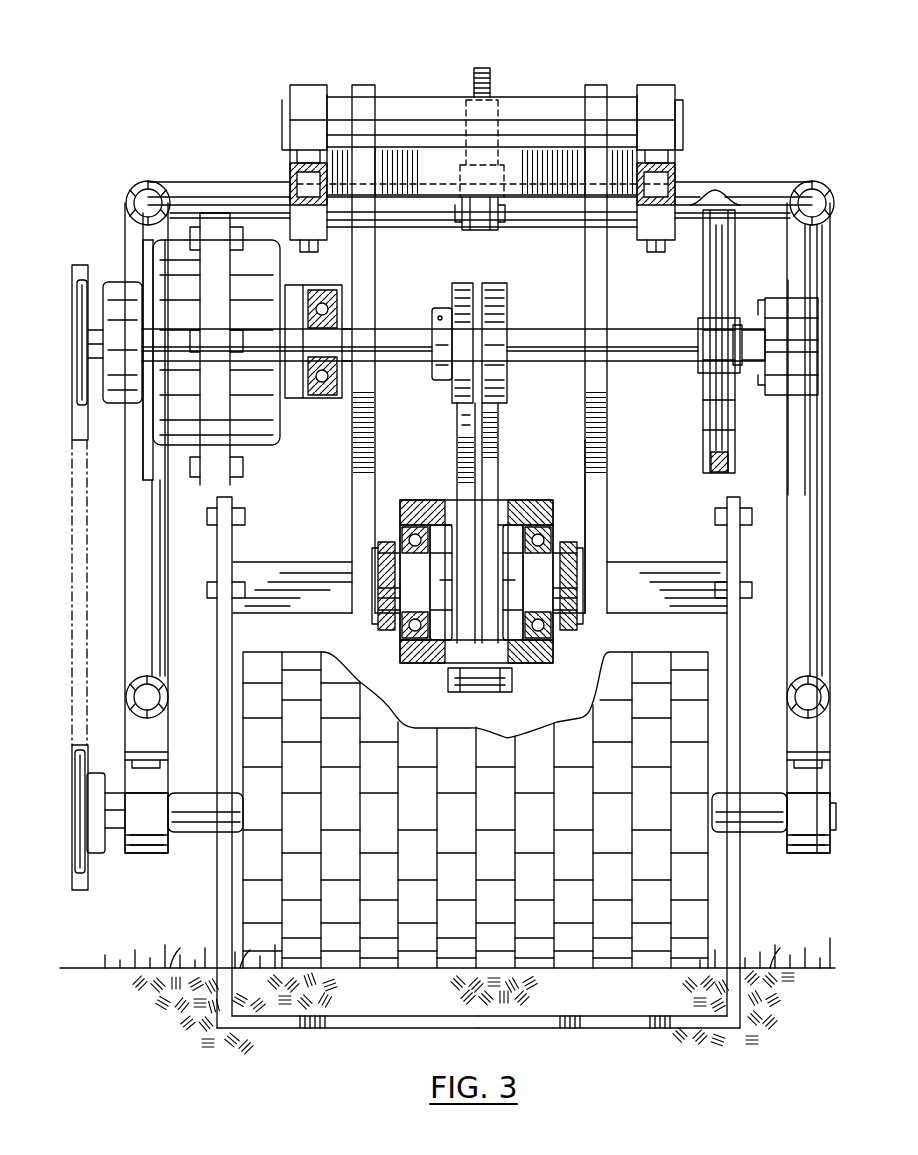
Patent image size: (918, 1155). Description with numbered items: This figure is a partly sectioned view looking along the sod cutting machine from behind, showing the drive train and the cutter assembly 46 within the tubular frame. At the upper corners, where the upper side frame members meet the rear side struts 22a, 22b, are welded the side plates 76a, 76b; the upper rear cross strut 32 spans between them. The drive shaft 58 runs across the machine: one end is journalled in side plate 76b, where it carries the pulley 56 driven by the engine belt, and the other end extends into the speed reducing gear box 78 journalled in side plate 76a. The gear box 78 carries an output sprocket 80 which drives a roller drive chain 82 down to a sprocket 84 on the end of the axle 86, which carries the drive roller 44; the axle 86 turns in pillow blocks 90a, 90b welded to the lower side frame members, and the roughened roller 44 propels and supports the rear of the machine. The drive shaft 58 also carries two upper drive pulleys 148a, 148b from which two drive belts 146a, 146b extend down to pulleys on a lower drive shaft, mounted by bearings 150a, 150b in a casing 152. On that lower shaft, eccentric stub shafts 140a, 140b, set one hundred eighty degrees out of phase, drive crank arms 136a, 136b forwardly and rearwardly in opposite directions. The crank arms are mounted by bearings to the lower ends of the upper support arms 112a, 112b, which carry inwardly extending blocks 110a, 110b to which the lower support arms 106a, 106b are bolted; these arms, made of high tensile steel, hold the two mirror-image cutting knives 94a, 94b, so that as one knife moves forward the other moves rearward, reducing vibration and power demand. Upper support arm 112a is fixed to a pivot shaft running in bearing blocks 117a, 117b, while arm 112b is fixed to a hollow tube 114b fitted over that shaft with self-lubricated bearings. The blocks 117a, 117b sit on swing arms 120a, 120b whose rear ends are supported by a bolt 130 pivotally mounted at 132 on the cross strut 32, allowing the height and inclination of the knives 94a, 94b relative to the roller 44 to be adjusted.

The rear side strut 22a is at (136, 513).
The rear side strut 22b is at (808, 452).
The upper rear cross strut 32 is at (215, 183).
The drive roller 44 is at (648, 660).
The cutter assembly 46 is at (616, 456).
The pulley 56 is at (712, 472).
The drive shaft 58 is at (649, 336).
The side plate 76a is at (148, 250).
The side plate 76b is at (810, 250).
The speed reducing gear box 78 is at (192, 322).
The output sprocket 80 is at (88, 308).
The roller drive chain 82 is at (82, 440).
The sprocket 84 is at (85, 773).
The axle 86 is at (198, 793).
The pillow block 90a is at (148, 853).
The pillow block 90b is at (795, 853).
The cutting knife 94a is at (332, 1032).
The cutting knife 94b is at (588, 1033).
The lower support arm 106a is at (220, 655).
The lower support arm 106b is at (735, 655).
The inwardly extending block 110a is at (290, 573).
The inwardly extending block 110b is at (640, 573).
The upper support arm 112a is at (352, 452).
The upper support arm 112b is at (607, 405).
The hollow tube 114b is at (428, 97).
The block 117a is at (305, 85).
The block 117b is at (652, 85).
The swing arm 120a is at (290, 170).
The swing arm 120b is at (675, 172).
The bolt 130 is at (486, 68).
The pivotal mounting 132 is at (498, 210).
The crank arm 136a is at (383, 618).
The crank arm 136b is at (570, 614).
The eccentric stub shaft 140a is at (405, 525).
The eccentric stub shaft 140b is at (556, 530).
The drive belt 146a is at (457, 424).
The drive belt 146b is at (498, 424).
The upper drive pulley 148a is at (455, 283).
The upper drive pulley 148b is at (507, 283).
The bearing 150a is at (432, 500).
The bearing 150b is at (523, 500).
The casing 152 is at (400, 650).